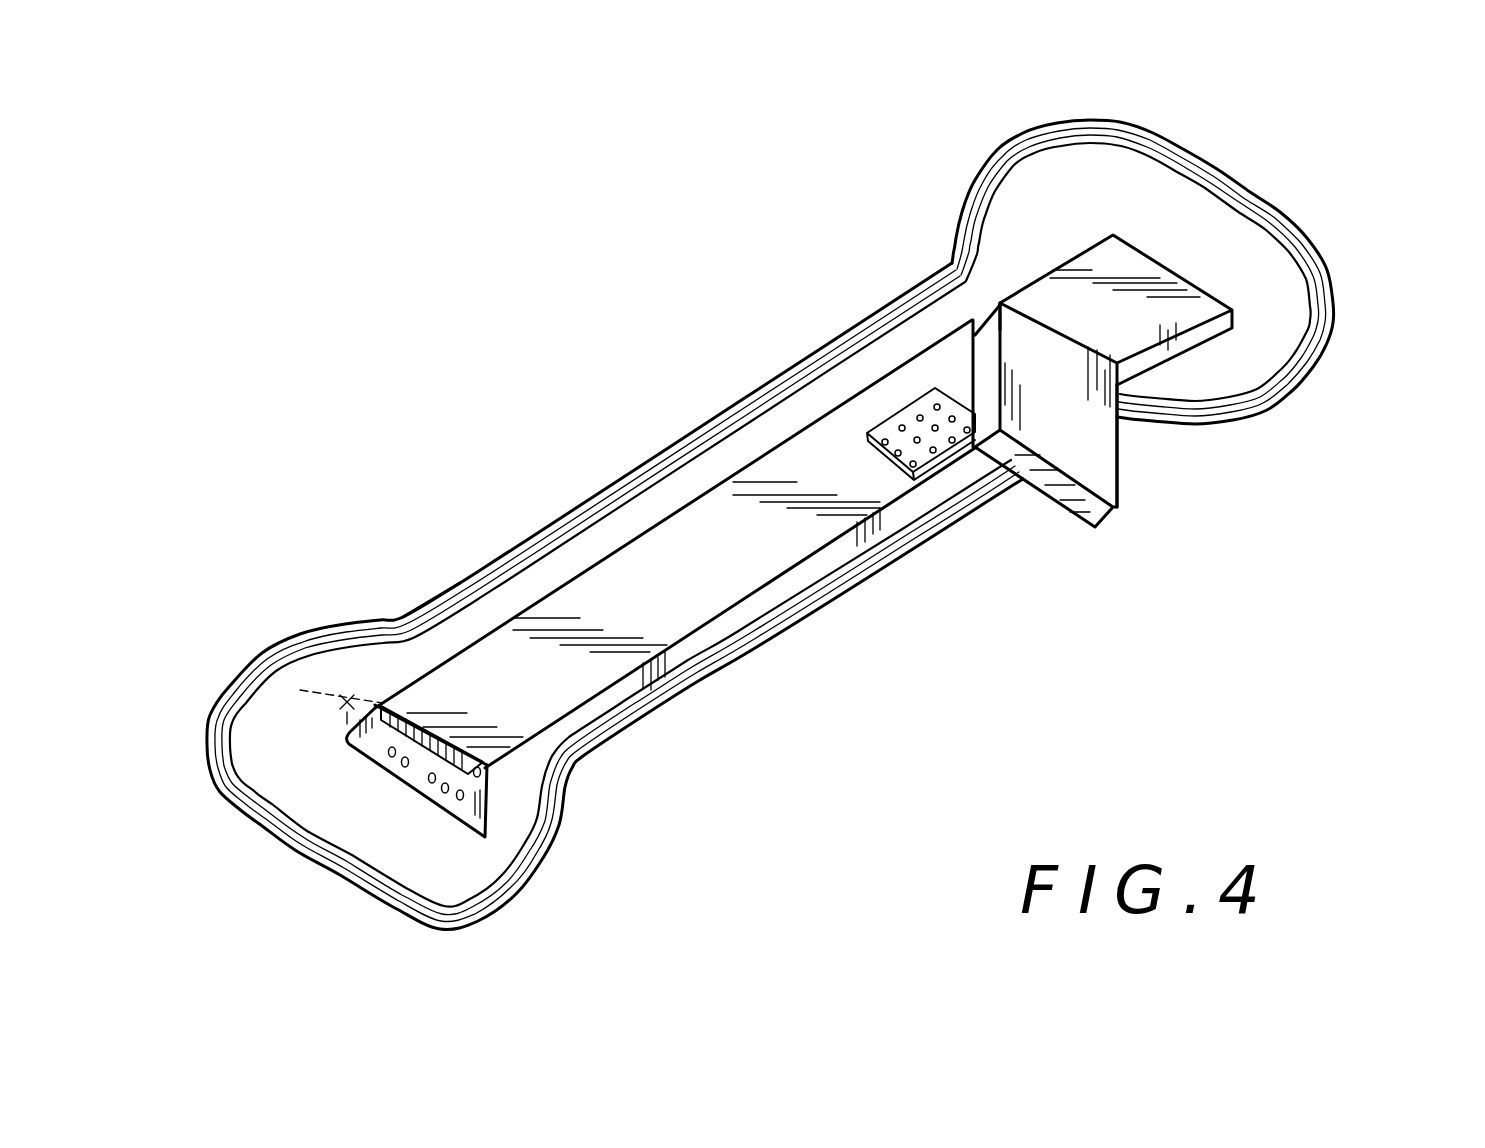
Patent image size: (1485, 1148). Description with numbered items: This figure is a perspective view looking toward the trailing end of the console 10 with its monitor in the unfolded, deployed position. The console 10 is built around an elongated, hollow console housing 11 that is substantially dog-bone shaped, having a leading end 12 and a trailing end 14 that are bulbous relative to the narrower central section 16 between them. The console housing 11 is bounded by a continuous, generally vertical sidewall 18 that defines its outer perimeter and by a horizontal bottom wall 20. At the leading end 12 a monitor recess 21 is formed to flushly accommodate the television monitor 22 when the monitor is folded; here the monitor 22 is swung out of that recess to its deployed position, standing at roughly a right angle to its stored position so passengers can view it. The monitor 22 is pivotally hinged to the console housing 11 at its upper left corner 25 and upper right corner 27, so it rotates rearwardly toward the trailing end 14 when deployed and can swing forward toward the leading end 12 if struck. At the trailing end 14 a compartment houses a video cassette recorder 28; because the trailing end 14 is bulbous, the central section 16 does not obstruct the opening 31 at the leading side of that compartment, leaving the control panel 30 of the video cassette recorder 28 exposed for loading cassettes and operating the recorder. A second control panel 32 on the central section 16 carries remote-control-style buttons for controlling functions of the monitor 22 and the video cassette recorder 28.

The console 10 is at (1346, 191).
The console housing 11 is at (537, 580).
The leading end 12 is at (1219, 160).
The trailing end 14 is at (250, 654).
The central section 16 is at (762, 376).
The sidewall 18 is at (660, 507).
The bottom wall 20 is at (710, 592).
The monitor recess 21 is at (1208, 318).
The television monitor 22 is at (1068, 391).
The upper left corner 25 is at (1003, 310).
The upper right corner 27 is at (1117, 383).
The video cassette recorder 28 is at (430, 727).
The control panel 30 is at (379, 748).
The opening 31 is at (445, 807).
The second control panel 32 is at (878, 448).